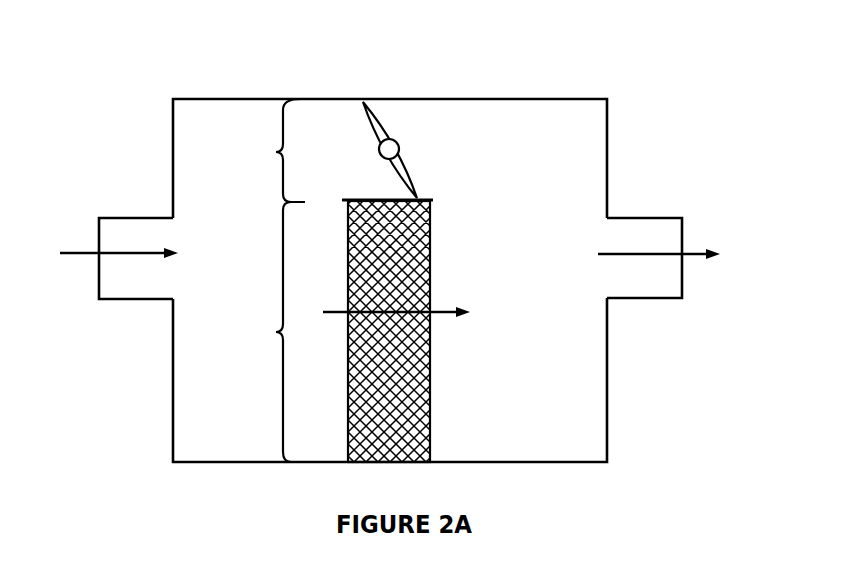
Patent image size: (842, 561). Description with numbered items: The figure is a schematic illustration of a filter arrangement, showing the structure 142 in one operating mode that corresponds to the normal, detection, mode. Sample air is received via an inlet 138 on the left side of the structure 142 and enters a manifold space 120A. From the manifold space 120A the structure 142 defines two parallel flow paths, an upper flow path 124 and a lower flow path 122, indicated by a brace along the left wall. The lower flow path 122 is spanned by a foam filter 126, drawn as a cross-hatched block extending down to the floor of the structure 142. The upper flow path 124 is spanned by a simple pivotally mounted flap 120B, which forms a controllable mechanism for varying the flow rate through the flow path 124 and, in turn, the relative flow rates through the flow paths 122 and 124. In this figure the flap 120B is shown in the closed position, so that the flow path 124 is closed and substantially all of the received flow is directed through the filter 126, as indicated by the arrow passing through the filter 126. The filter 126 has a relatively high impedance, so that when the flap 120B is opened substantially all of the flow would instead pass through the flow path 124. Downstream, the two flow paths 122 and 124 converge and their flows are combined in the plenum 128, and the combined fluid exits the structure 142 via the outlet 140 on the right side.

The manifold space 120A is at (258, 254).
The flap 120B is at (383, 123).
The flow path 122 is at (276, 332).
The flow path 124 is at (276, 152).
The foam filter 126 is at (417, 463).
The plenum 128 is at (538, 298).
The inlet 138 is at (127, 300).
The outlet 140 is at (655, 299).
The structure 142 is at (575, 75).